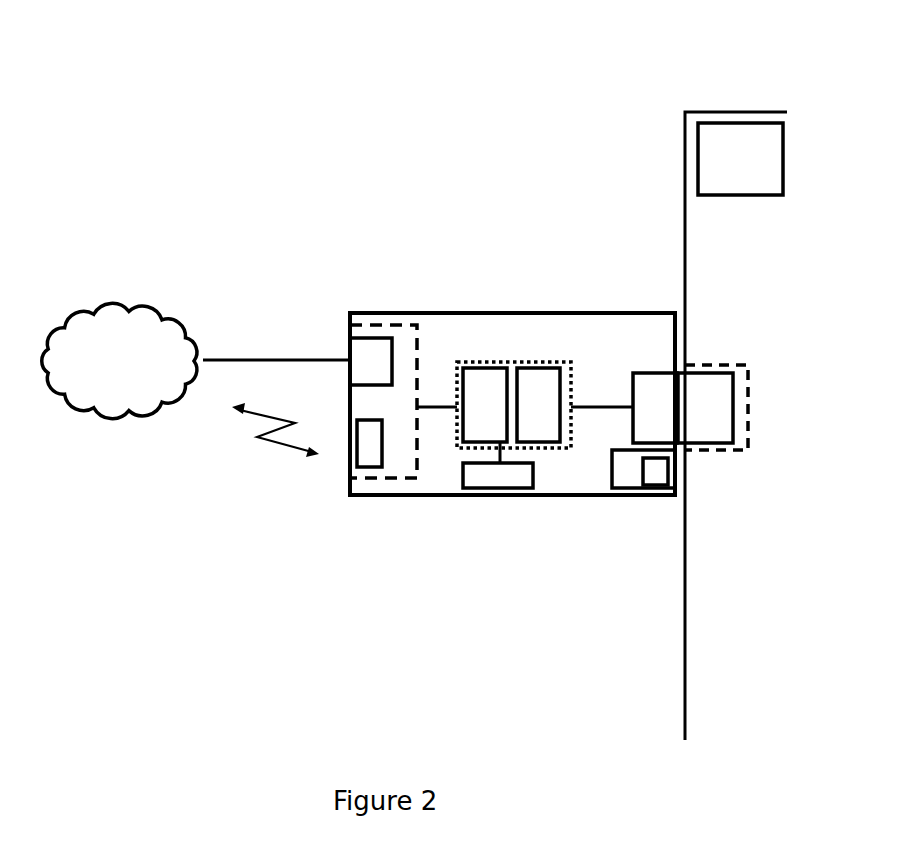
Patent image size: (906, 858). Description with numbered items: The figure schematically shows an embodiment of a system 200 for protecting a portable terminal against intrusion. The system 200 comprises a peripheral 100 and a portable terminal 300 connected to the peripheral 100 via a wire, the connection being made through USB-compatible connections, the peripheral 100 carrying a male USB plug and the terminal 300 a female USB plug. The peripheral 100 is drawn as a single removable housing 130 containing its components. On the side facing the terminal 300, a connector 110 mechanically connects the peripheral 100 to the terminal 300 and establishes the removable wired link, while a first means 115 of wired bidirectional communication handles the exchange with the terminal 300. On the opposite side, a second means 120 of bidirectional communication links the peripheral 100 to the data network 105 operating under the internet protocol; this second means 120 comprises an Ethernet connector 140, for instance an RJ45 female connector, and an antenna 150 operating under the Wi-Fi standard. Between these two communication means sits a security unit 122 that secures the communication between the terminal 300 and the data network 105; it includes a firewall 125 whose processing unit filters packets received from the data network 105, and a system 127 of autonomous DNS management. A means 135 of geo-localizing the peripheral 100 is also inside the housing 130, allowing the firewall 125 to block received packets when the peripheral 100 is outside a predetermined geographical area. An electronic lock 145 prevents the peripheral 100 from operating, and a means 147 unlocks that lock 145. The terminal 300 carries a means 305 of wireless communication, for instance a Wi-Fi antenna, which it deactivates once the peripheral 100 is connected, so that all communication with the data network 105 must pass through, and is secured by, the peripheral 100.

The system 200 is at (562, 87).
The portable terminal 300 is at (693, 425).
The means of wireless communication 305 is at (750, 178).
The data network 105 is at (124, 276).
The peripheral 100 is at (502, 301).
The housing 130 is at (615, 313).
The second means of bidirectional communication 120 is at (403, 332).
The Ethernet connector 140 is at (357, 348).
The antenna 150 is at (365, 433).
The security unit 122 is at (548, 450).
The firewall 125 is at (473, 423).
The system of autonomous DNS management 127 is at (533, 383).
The means of geo-localizing 135 is at (499, 480).
The first means of wired bidirectional communication 115 is at (655, 385).
The connector 110 is at (700, 432).
The electronic lock 145 is at (632, 475).
The means of unlocking 147 is at (660, 488).